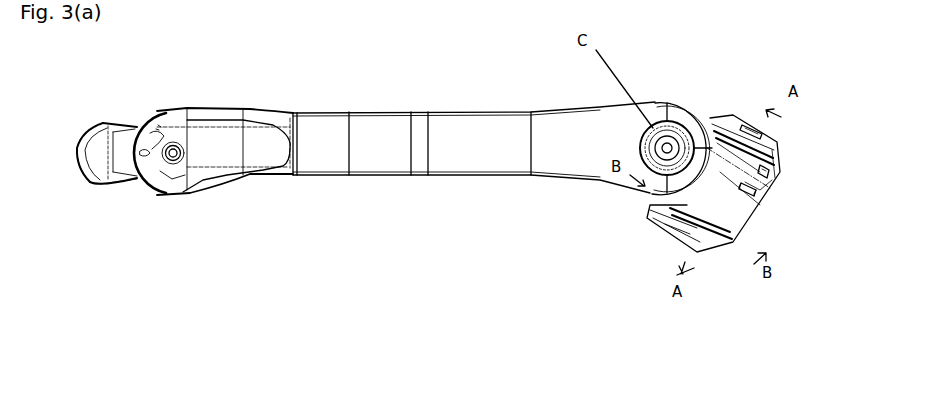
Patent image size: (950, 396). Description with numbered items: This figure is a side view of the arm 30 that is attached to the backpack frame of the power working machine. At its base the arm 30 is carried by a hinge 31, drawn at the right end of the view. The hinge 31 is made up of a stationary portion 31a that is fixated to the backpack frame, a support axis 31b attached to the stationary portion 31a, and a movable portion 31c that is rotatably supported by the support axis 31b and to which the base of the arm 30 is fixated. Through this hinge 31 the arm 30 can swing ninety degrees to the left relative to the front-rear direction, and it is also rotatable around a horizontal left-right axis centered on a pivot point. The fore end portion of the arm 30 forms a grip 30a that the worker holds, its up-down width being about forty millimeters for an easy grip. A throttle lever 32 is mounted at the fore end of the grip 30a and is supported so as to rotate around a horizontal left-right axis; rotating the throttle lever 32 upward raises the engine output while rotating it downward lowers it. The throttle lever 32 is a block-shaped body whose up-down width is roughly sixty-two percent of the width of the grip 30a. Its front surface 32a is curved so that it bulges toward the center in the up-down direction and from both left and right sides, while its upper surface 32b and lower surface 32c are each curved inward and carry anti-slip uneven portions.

The arm 30 is at (462, 110).
The grip 30a is at (217, 137).
The hinge 31 is at (725, 250).
The stationary portion 31a is at (765, 183).
The support axis 31b is at (753, 205).
The movable portion 31c is at (723, 122).
The throttle lever 32 is at (108, 126).
The front surface 32a is at (80, 156).
The upper surface 32b is at (118, 128).
The lower surface 32c is at (120, 184).